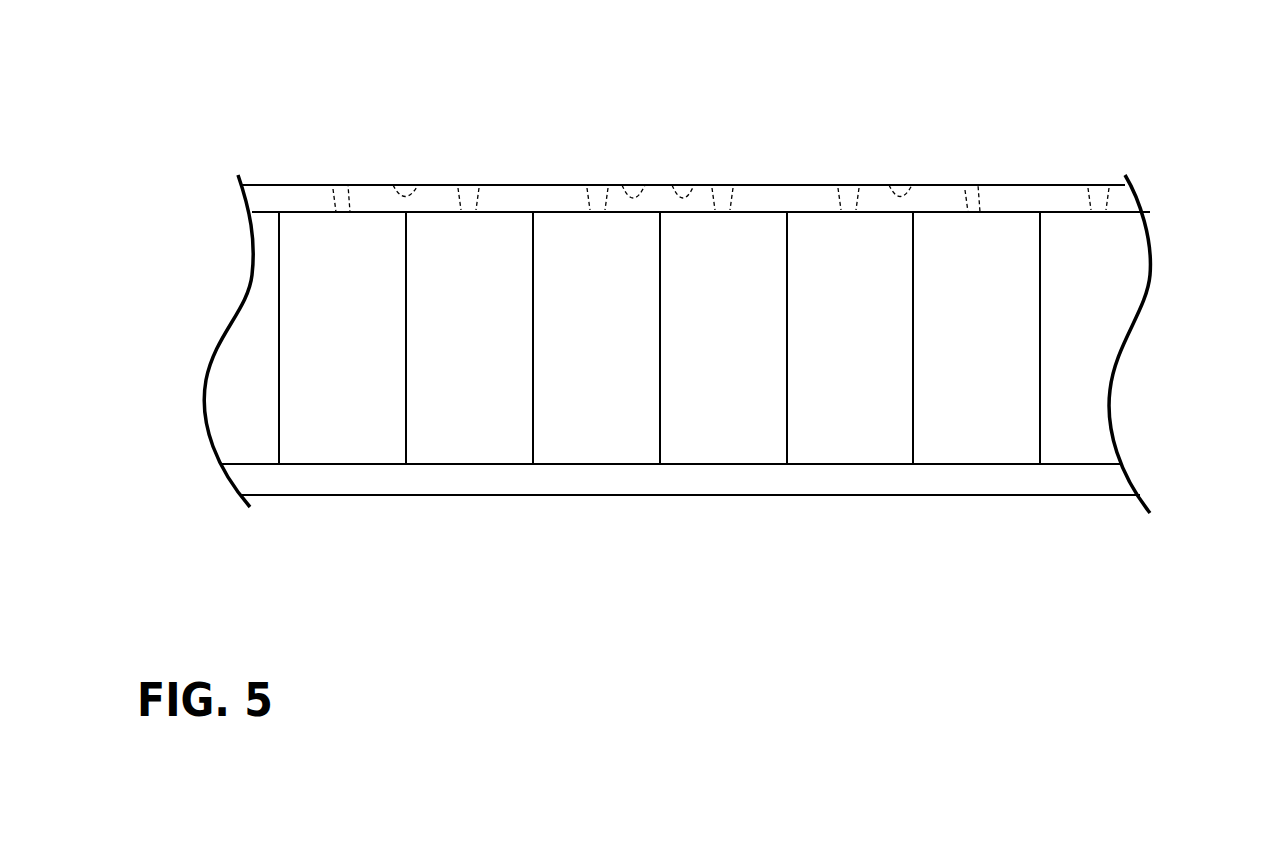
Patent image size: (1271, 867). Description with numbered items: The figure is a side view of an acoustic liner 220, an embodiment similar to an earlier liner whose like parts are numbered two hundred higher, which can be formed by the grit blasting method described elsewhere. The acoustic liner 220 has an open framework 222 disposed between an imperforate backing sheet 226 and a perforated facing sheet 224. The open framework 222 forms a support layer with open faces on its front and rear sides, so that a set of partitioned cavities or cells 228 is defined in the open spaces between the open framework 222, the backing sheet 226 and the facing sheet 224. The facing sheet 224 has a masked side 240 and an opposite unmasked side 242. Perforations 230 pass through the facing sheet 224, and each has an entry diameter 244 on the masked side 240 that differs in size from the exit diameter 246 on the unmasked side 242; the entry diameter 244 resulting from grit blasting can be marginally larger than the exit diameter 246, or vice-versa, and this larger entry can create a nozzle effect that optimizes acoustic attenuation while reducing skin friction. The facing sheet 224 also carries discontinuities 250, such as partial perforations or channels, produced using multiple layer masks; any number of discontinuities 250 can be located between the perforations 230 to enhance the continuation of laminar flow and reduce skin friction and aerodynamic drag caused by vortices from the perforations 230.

The acoustic liner 220 is at (701, 302).
The open framework 222 is at (787, 290).
The facing sheet 224 is at (1058, 184).
The backing sheet 226 is at (641, 496).
The cells 228 is at (721, 322).
The perforations 230 is at (326, 198).
The masked side 240 is at (567, 185).
The unmasked side 242 is at (1123, 213).
The entry diameter 244 is at (345, 185).
The exit diameter 246 is at (340, 213).
The discontinuities 250 is at (405, 195).